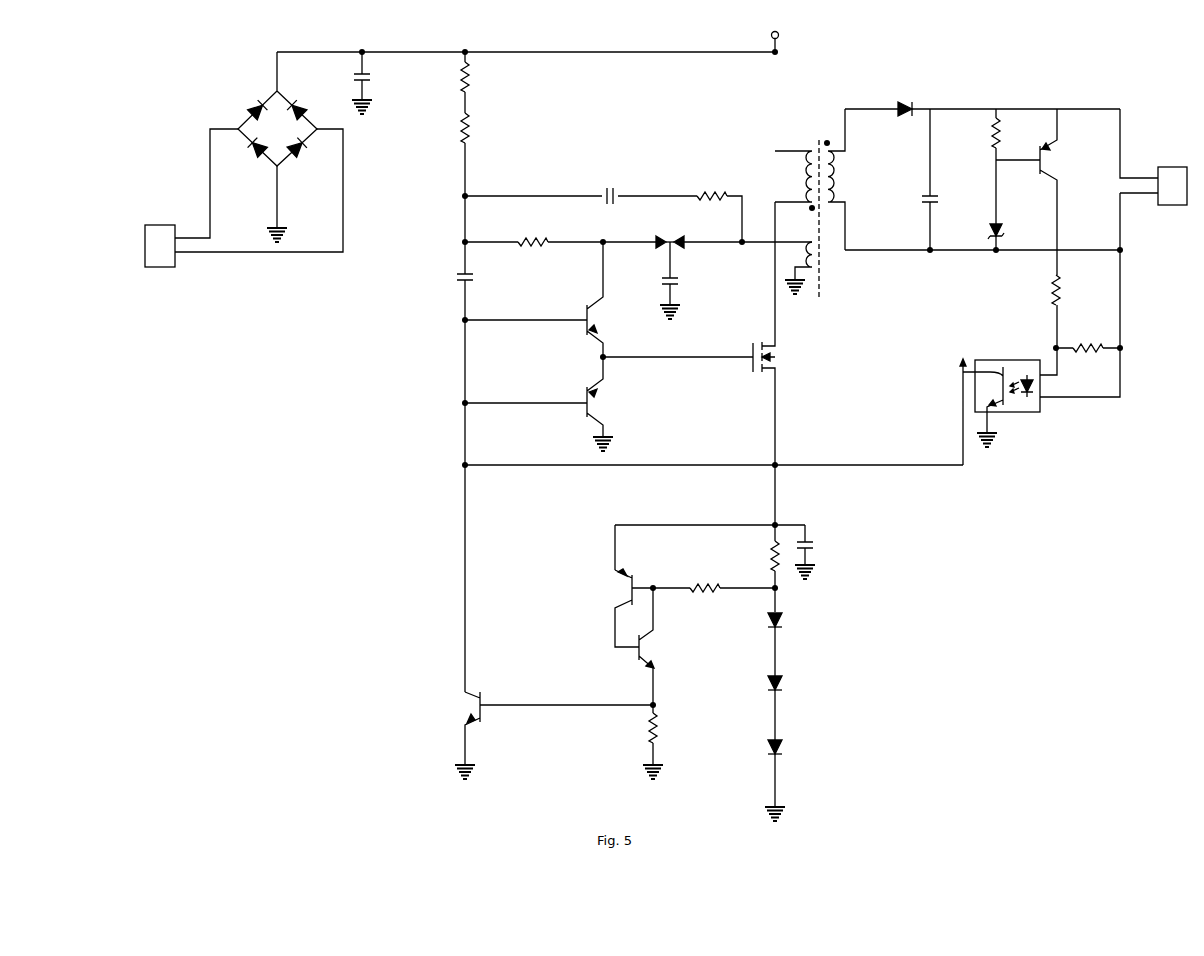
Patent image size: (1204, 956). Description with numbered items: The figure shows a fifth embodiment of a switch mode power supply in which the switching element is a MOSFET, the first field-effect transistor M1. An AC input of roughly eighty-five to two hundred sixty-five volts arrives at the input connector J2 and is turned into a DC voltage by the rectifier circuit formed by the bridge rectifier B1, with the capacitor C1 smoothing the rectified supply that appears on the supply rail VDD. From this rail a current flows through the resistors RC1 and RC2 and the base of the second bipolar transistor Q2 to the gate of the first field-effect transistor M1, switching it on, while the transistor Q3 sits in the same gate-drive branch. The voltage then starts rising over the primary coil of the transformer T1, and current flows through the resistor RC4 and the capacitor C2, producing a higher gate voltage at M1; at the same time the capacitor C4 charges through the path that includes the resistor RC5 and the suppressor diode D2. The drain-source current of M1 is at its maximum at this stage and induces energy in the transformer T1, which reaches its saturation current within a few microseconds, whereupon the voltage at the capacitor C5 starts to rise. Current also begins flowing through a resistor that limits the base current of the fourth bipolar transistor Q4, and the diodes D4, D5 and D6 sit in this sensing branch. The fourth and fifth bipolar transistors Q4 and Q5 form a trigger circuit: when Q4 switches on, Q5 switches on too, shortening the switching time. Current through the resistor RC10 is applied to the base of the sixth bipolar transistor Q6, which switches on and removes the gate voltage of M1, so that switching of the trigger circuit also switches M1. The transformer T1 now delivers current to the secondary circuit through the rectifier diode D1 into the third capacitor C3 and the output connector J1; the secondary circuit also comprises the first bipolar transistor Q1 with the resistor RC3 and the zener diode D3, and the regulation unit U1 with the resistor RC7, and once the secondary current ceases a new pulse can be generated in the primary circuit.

The supply voltage node VDD is at (780, 33).
The bridge rectifier B1 is at (277, 147).
The input connector J2 is at (244, 200).
The capacitor C1 is at (373, 87).
The resistor RC1 is at (484, 77).
The resistor RC2 is at (618, 364).
The capacitor C2 is at (606, 188).
The resistor RC4 is at (710, 186).
The resistor RC5 is at (804, 395).
The transient voltage suppressor diode D2 is at (672, 234).
The capacitor C4 is at (679, 280).
The second bipolar transistor Q2 is at (547, 299).
The transistor Q3 is at (547, 404).
The first field-effect transistor M1 is at (704, 363).
The transformer T1 is at (822, 204).
The output rectifier diode D1 is at (906, 100).
The third capacitor C3 is at (920, 181).
The resistor RC3 is at (1000, 165).
The zener diode D3 is at (1007, 237).
The first bipolar transistor Q1 is at (1037, 242).
The output connector J1 is at (1113, 253).
The resistor RC7 is at (1088, 338).
The regulation unit U1 is at (1007, 402).
The capacitor C5 is at (815, 555).
The fourth bipolar transistor Q4 is at (621, 600).
The fifth bipolar transistor Q5 is at (652, 648).
The resistor RC10 is at (642, 744).
The diode D4 is at (791, 640).
The diode D5 is at (792, 705).
The diode D6 is at (791, 777).
The sixth bipolar transistor Q6 is at (538, 734).